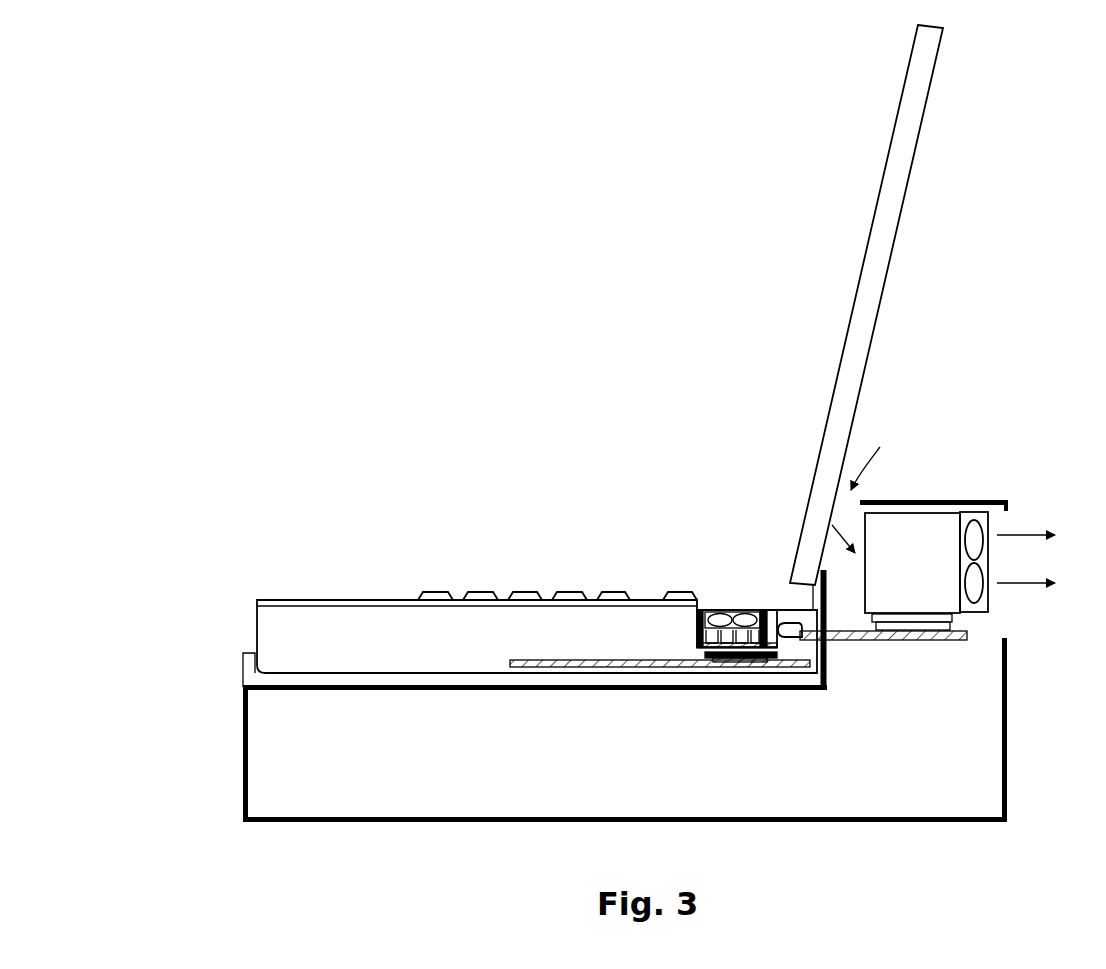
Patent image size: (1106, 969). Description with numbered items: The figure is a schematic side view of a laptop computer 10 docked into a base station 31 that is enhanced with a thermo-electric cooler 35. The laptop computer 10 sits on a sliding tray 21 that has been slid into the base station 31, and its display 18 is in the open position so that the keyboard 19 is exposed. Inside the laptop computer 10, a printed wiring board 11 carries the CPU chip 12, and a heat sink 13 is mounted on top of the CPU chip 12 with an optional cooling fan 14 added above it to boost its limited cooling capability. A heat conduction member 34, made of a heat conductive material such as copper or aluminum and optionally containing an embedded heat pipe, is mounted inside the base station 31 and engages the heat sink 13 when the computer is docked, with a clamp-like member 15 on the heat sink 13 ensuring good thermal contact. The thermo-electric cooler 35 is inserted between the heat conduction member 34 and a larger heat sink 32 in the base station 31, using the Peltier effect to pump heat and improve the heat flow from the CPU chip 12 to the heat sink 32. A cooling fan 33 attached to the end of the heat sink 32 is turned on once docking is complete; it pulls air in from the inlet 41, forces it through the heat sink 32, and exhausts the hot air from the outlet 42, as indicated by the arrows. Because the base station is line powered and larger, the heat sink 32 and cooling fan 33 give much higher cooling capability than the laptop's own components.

The laptop computer 10 is at (245, 557).
The printed wiring board 11 is at (527, 660).
The CPU chip 12 is at (700, 657).
The heat sink 13 is at (693, 637).
The cooling fan 14 is at (697, 638).
The clamp-like member 15 is at (783, 622).
The display 18 is at (878, 170).
The keyboard 19 is at (438, 592).
The sliding tray 21 is at (245, 673).
The base station 31 is at (1003, 788).
The heat sink 32 is at (903, 528).
The cooling fan 33 is at (983, 512).
The heat conduction member 34 is at (923, 641).
The thermo-electric cooler 35 is at (958, 622).
The inlet 41 is at (843, 503).
The outlet 42 is at (998, 527).